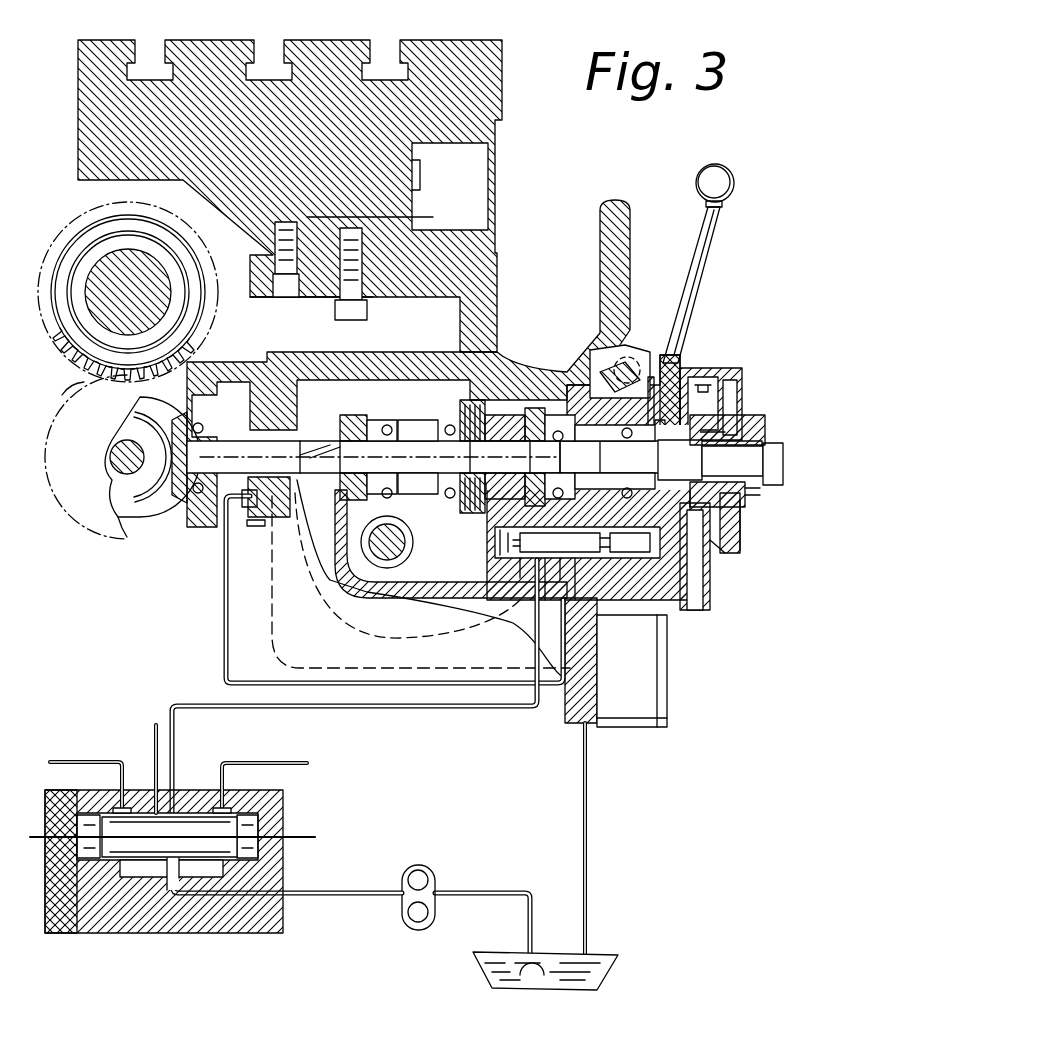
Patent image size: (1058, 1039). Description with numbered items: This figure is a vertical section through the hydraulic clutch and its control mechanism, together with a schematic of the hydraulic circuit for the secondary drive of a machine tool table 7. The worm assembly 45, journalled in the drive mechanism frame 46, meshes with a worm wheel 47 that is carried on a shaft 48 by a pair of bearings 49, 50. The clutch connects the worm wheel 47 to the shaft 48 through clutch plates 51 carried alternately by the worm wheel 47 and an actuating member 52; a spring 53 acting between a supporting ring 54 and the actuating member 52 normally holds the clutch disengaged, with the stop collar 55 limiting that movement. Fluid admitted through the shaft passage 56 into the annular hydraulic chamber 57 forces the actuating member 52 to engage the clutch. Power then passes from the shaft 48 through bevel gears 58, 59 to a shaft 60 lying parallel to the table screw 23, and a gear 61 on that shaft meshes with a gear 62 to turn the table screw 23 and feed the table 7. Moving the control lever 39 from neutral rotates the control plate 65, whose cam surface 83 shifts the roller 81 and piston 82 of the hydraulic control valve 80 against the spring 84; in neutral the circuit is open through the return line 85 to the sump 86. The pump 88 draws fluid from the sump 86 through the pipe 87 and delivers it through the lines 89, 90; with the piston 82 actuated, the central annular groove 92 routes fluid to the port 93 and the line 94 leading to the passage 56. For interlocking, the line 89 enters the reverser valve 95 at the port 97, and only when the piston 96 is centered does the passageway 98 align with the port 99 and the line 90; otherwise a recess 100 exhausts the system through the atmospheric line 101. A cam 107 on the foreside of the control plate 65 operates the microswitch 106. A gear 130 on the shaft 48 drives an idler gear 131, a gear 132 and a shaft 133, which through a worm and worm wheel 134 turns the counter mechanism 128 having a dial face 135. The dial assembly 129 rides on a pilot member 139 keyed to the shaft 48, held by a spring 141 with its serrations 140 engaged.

The table 7 is at (458, 44).
The table screw 23 is at (112, 275).
The control lever 39 is at (693, 265).
The worm assembly 45 is at (400, 542).
The drive mechanism frame 46 is at (398, 595).
The worm wheel 47 is at (388, 395).
The shaft 48 is at (302, 441).
The bearing 49 is at (380, 428).
The bearing 50 is at (445, 437).
The clutch plates 51 is at (475, 512).
The actuating member 52 is at (503, 412).
The spring 53 is at (527, 457).
The supporting ring 54 is at (501, 457).
The stop collar 55 is at (560, 457).
The shaft passage 56 is at (342, 450).
The annular hydraulic chamber 57 is at (558, 459).
The bevel gear 58 is at (178, 500).
The bevel gear 59 is at (138, 515).
The shaft 60 is at (112, 457).
The gear 61 is at (62, 395).
The gear 62 is at (68, 362).
The control plate 65 is at (708, 580).
The hydraulic control valve 80 is at (615, 615).
The roller 81 is at (668, 565).
The piston 82 is at (625, 540).
The cam surface 83 is at (672, 482).
The spring 84 is at (520, 578).
The return line 85 is at (597, 684).
The sump 86 is at (615, 956).
The pipe 87 is at (513, 893).
The pump 88 is at (436, 885).
The line 89 is at (328, 893).
The line 90 is at (413, 715).
The central annular groove 92 is at (572, 540).
The port 93 is at (569, 579).
The line 94 is at (427, 680).
The reverser valve 95 is at (121, 950).
The piston 96 is at (105, 865).
The port 97 is at (160, 875).
The passageway 98 is at (175, 838).
The port 99 is at (185, 790).
The recess 100 is at (160, 822).
The atmospheric line 101 is at (150, 737).
The microswitch 106 is at (720, 410).
The cam 107 is at (720, 432).
The counter mechanism 128 is at (620, 350).
The dial assembly 129 is at (742, 535).
The gear 130 is at (680, 460).
The idler gear 131 is at (668, 427).
The gear 132 is at (654, 400).
The shaft 133 is at (680, 368).
The worm and worm wheel 134 is at (615, 461).
The dial face 135 is at (637, 362).
The pilot member 139 is at (742, 464).
The serrations 140 is at (722, 550).
The spring 141 is at (745, 505).